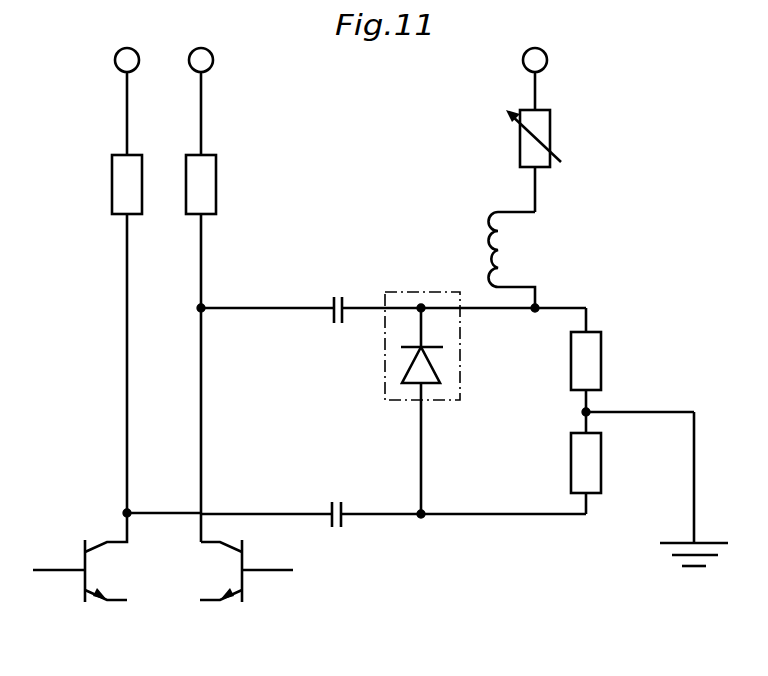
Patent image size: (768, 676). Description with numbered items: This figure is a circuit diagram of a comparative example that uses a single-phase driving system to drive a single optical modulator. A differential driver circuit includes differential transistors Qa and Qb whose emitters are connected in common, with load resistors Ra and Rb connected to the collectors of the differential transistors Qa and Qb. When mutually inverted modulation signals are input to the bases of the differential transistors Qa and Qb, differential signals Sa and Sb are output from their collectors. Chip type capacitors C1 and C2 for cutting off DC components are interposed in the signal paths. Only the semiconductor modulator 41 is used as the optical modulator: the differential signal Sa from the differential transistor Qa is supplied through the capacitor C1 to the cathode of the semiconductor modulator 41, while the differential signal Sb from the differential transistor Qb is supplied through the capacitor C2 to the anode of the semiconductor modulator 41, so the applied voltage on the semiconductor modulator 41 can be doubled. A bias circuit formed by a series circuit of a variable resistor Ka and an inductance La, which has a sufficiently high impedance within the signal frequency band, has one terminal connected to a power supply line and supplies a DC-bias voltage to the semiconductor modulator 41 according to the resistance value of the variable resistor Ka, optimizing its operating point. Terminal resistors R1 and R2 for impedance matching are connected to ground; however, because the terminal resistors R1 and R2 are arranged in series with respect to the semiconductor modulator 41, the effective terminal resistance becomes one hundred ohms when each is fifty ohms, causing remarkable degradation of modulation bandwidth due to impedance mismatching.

The load resistor Rb is at (118, 183).
The load resistor Ra is at (209, 182).
The differential signal Sa is at (265, 288).
The differential signal Sb is at (183, 494).
The chip type capacitor C1 is at (333, 298).
The chip type capacitor C2 is at (332, 503).
The semiconductor modulator 41 is at (425, 292).
The variable resistor Ka is at (543, 164).
The inductance La is at (497, 268).
The terminal resistor R1 is at (596, 355).
The terminal resistor R2 is at (596, 467).
The differential transistor Qb is at (83, 600).
The differential transistor Qa is at (244, 599).